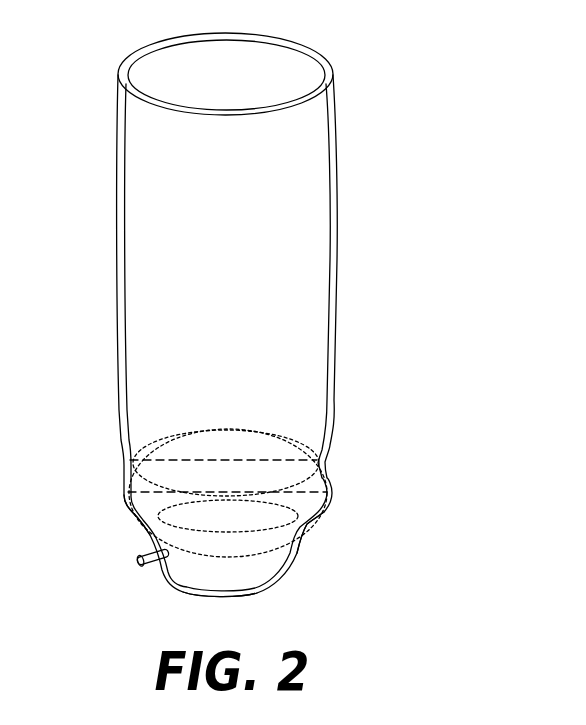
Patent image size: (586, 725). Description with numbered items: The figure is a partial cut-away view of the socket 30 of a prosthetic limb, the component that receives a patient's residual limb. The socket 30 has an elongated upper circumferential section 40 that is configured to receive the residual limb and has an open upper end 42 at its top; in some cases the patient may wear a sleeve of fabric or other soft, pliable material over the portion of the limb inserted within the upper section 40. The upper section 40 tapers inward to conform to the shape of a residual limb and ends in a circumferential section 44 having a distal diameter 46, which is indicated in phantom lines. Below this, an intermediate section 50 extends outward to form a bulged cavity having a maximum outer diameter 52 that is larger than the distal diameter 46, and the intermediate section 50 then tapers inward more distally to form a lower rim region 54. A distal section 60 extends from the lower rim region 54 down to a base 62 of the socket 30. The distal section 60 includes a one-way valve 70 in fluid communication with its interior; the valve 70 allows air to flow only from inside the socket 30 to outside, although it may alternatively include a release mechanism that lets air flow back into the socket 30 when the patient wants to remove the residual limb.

The socket 30 is at (363, 299).
The upper circumferential section 40 is at (341, 371).
The open upper end 42 is at (273, 56).
The circumferential section 44 is at (288, 435).
The distal diameter 46 is at (164, 460).
The intermediate section 50 is at (353, 500).
The maximum outer diameter 52 is at (164, 490).
The lower rim region 54 is at (136, 536).
The distal section 60 is at (295, 573).
The base 62 is at (253, 595).
The one-way valve 70 is at (151, 573).